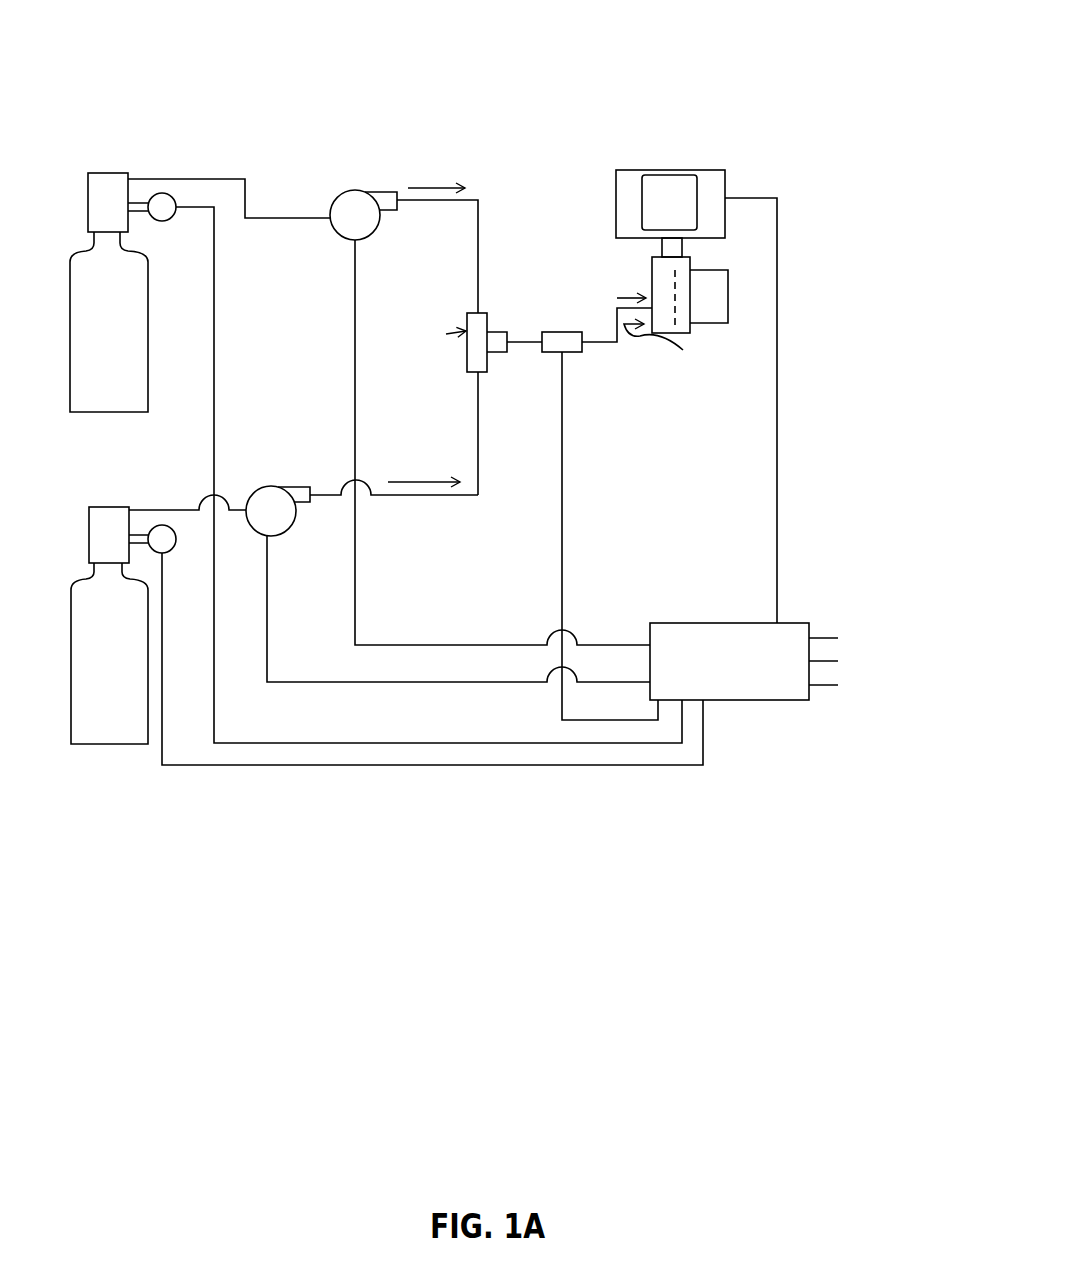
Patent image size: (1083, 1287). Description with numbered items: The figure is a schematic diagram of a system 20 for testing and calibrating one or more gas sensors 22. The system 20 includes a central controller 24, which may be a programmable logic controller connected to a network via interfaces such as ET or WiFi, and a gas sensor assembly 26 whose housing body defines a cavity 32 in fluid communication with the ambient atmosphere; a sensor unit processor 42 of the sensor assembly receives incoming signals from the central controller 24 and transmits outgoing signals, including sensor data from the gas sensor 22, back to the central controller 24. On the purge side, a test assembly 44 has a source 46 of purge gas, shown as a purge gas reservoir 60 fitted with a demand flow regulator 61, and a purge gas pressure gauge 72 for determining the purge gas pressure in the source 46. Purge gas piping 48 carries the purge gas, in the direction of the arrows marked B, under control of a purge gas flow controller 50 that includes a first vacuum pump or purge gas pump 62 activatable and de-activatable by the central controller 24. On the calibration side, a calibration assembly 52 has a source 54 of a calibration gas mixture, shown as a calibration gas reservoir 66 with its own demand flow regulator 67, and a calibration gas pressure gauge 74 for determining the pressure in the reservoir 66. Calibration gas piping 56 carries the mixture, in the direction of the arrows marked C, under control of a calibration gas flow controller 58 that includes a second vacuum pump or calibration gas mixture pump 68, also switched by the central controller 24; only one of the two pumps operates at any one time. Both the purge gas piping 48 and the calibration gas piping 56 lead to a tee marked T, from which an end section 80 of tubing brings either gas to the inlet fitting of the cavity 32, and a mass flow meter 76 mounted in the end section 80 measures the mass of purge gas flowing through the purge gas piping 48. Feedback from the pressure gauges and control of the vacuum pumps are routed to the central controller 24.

The system 20 is at (688, 72).
The calibration assembly 52 is at (147, 158).
The demand flow regulator 67 is at (88, 188).
The source of calibration gas mixture 54 is at (93, 290).
The calibration gas reservoir 66 is at (82, 365).
The calibration gas pressure gauge 74 is at (172, 221).
The test assembly 44 is at (126, 820).
The demand flow regulator 61 is at (89, 515).
The source of purge gas 46 is at (87, 599).
The purge gas reservoir 60 is at (80, 671).
The purge gas pressure gauge 72 is at (170, 552).
The calibration gas flow controller 58 is at (367, 212).
The calibration gas mixture pump 68 is at (340, 222).
The calibration gas piping 56 is at (479, 258).
The purge gas flow controller 50 is at (288, 518).
The purge gas pump 62 is at (254, 530).
The purge gas piping 48 is at (420, 499).
The mass flow meter 76 is at (552, 348).
The end section of tubing 80 is at (598, 340).
The gas sensor assembly 26 is at (668, 260).
The sensor unit processor 42 is at (690, 212).
The cavity 32 is at (655, 272).
The gas sensor 22 is at (725, 322).
The central controller 24 is at (752, 681).